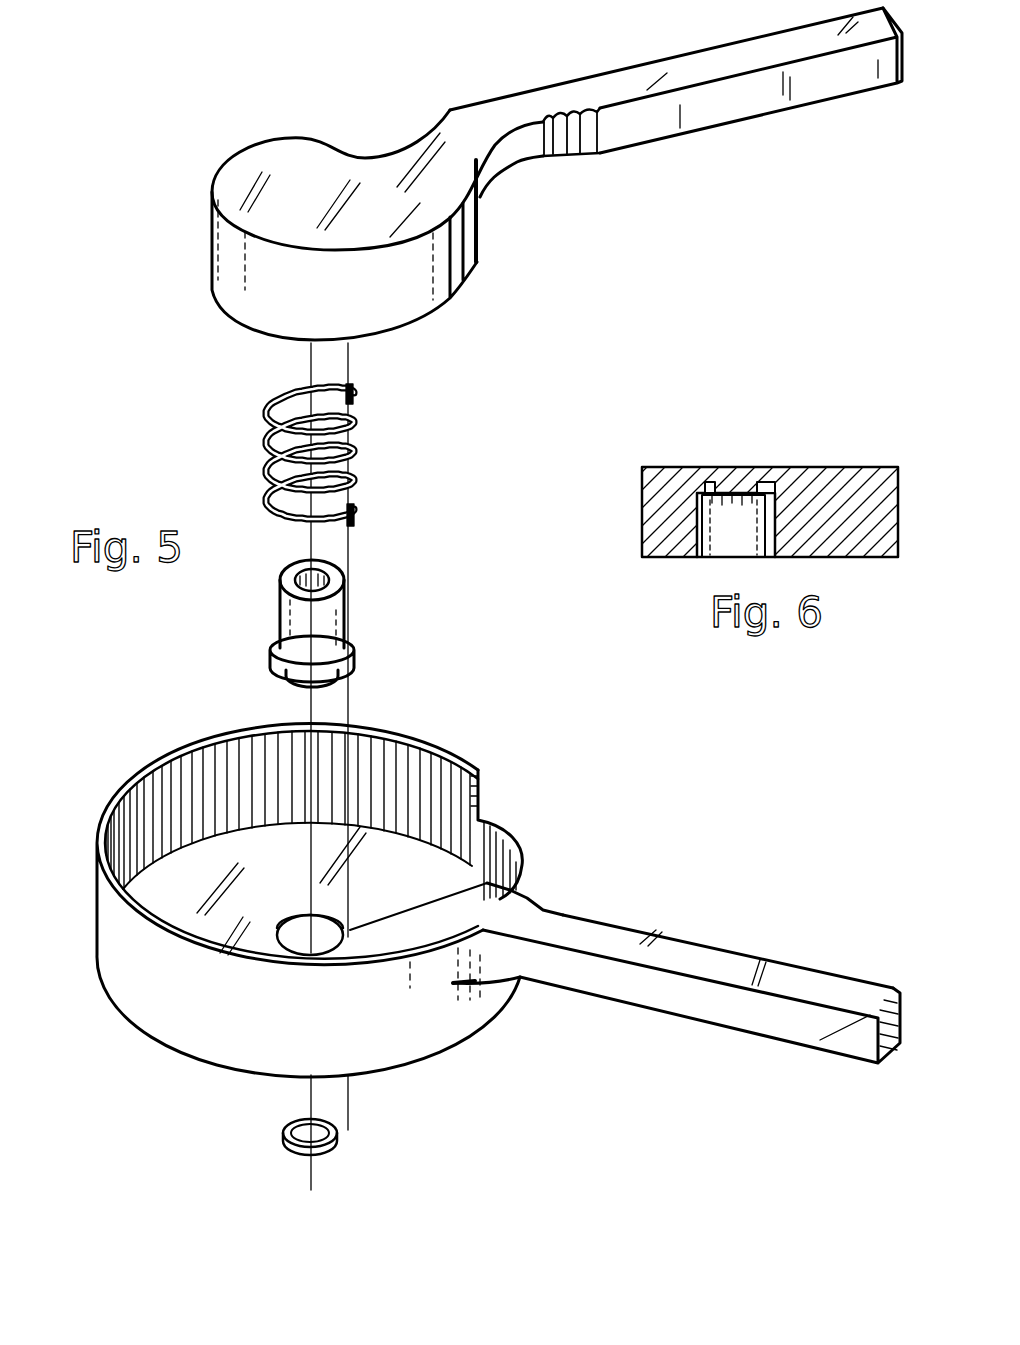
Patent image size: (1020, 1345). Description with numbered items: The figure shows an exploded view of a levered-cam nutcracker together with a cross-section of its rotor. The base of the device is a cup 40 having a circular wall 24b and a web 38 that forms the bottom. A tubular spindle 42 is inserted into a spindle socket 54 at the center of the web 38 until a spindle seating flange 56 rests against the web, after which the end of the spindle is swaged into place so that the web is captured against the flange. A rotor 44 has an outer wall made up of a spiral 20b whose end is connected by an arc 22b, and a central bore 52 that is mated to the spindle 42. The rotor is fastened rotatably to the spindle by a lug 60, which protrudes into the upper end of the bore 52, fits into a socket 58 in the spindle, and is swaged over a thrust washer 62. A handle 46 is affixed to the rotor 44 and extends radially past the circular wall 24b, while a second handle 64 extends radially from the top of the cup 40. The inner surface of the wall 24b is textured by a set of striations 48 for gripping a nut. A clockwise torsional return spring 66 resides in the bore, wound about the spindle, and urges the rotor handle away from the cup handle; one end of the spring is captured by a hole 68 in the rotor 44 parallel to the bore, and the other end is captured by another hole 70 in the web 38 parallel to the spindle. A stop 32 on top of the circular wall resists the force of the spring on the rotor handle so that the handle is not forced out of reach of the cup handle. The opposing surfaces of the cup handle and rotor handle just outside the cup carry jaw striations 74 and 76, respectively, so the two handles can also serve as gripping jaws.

In FIG. 5, the spiral 20b is at (420, 283).
In FIG. 5, the arc 22b is at (397, 152).
In FIG. 5, the rotor 44 is at (298, 212).
In FIG. 6, the rotor 44 is at (847, 477).
In FIG. 5, the handle 46 is at (742, 108).
In FIG. 5, the jaw striations 76 is at (547, 143).
In FIG. 5, the clockwise torsional return spring 66 is at (277, 402).
In FIG. 5, the socket 58 is at (328, 570).
In FIG. 5, the tubular spindle 42 is at (363, 541).
In FIG. 5, the spindle seating flange 56 is at (347, 665).
In FIG. 5, the circular wall 24b is at (473, 894).
In FIG. 5, the striations 48 is at (183, 800).
In FIG. 5, the web 38 is at (405, 833).
In FIG. 5, the stop 32 is at (480, 802).
In FIG. 5, the spindle socket 54 is at (277, 932).
In FIG. 5, the hole 70 is at (492, 882).
In FIG. 5, the jaw striations 74 is at (560, 912).
In FIG. 5, the handle 64 is at (703, 998).
In FIG. 5, the cup 40 is at (403, 1032).
In FIG. 5, the thrust washer 62 is at (283, 1135).
In FIG. 6, the lug 60 is at (738, 486).
In FIG. 6, the hole 68 is at (775, 485).
In FIG. 6, the central bore 52 is at (740, 533).